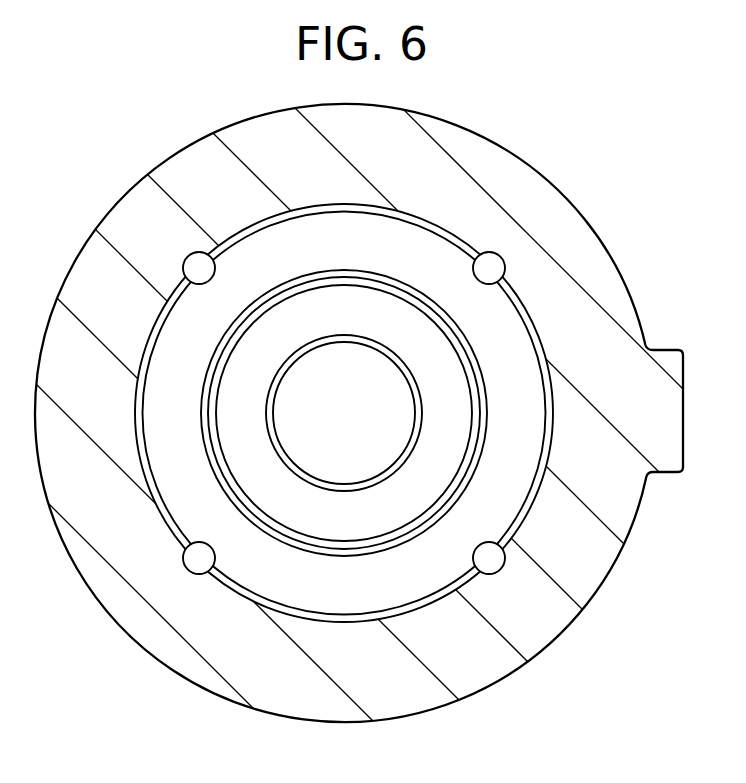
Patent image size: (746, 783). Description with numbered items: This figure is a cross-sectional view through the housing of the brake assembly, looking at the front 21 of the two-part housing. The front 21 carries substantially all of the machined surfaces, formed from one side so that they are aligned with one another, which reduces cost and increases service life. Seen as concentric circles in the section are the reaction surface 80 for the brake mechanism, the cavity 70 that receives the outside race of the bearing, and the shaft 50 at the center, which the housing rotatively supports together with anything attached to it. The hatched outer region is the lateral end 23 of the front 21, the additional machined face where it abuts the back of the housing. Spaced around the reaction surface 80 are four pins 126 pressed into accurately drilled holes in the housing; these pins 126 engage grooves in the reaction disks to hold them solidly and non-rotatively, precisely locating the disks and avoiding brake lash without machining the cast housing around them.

The front of the housing 21 is at (487, 160).
The lateral end of the front of the housing 23 is at (140, 210).
The reaction surface 80 is at (355, 251).
The cavity for the outside race of the bearing 70 is at (355, 318).
The shaft 50 is at (357, 425).
The pins 126 is at (474, 268).